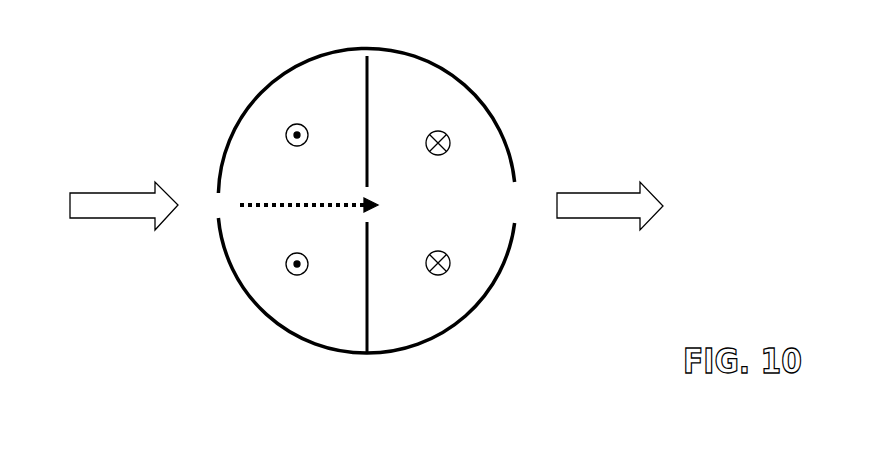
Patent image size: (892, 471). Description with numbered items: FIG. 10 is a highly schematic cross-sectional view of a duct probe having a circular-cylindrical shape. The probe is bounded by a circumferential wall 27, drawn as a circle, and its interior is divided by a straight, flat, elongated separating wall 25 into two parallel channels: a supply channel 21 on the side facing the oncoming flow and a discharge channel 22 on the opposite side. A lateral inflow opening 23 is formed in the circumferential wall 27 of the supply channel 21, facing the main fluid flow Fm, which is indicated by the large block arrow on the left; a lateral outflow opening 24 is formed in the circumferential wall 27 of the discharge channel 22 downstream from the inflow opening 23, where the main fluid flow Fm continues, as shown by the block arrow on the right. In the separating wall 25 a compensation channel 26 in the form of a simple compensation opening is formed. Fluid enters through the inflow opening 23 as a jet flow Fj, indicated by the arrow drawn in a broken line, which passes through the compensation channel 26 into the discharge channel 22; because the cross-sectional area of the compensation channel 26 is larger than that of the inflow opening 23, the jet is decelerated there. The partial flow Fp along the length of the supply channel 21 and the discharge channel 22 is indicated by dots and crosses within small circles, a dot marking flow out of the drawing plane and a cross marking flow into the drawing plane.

The supply channel 21 is at (270, 319).
The discharge channel 22 is at (492, 290).
The inflow opening 23 is at (218, 197).
The outflow opening 24 is at (513, 203).
The separating wall 25 is at (367, 88).
The compensation channel 26 is at (363, 196).
The circumferential wall 27 is at (273, 89).
The main fluid flow Fm is at (104, 208).
The partial flow Fp is at (437, 130).
The jet flow Fj is at (347, 208).